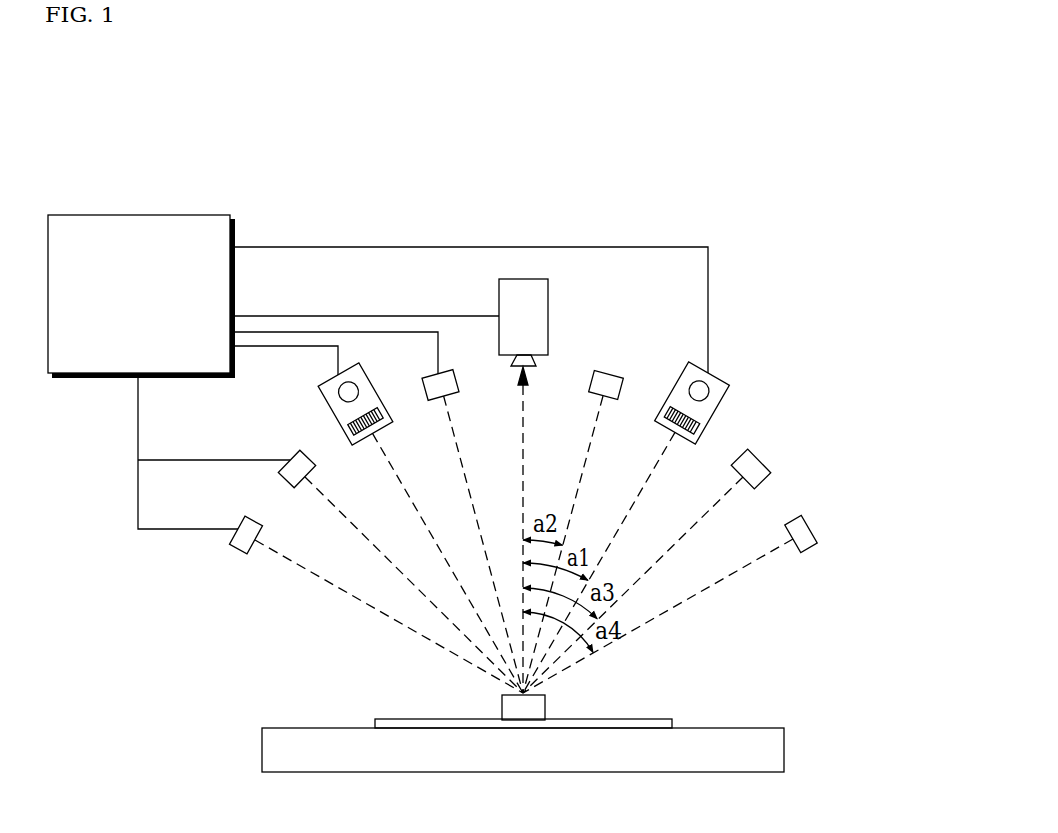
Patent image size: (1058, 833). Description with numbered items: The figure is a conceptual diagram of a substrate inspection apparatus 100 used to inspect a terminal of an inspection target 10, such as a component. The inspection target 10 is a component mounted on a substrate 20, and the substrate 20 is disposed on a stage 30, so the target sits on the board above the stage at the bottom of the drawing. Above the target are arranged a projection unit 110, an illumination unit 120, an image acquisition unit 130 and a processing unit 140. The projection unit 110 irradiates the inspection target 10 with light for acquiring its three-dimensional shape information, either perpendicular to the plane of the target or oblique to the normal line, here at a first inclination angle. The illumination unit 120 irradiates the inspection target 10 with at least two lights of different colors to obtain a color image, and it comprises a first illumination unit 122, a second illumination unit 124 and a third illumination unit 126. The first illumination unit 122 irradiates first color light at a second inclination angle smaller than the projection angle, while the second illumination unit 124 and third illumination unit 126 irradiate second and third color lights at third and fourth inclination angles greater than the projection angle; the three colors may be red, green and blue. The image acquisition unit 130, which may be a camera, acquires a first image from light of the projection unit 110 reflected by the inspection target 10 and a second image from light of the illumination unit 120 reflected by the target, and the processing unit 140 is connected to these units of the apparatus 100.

The substrate inspection apparatus 100 is at (777, 98).
The processing unit 140 is at (143, 213).
The image acquisition unit 130 is at (548, 300).
The projection unit 110 is at (318, 410).
The illumination unit 120 is at (893, 305).
The first illumination unit 122 is at (611, 372).
The second illumination unit 124 is at (760, 457).
The third illumination unit 126 is at (815, 522).
The inspection target 10 is at (545, 708).
The substrate 20 is at (672, 723).
The stage 30 is at (785, 745).